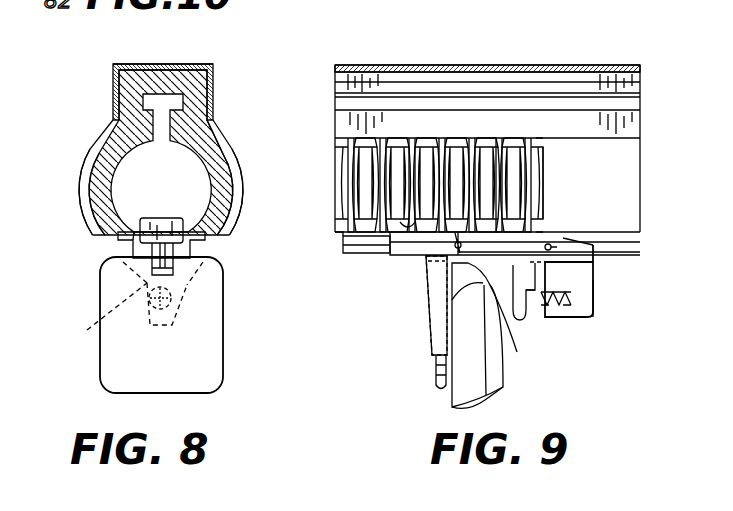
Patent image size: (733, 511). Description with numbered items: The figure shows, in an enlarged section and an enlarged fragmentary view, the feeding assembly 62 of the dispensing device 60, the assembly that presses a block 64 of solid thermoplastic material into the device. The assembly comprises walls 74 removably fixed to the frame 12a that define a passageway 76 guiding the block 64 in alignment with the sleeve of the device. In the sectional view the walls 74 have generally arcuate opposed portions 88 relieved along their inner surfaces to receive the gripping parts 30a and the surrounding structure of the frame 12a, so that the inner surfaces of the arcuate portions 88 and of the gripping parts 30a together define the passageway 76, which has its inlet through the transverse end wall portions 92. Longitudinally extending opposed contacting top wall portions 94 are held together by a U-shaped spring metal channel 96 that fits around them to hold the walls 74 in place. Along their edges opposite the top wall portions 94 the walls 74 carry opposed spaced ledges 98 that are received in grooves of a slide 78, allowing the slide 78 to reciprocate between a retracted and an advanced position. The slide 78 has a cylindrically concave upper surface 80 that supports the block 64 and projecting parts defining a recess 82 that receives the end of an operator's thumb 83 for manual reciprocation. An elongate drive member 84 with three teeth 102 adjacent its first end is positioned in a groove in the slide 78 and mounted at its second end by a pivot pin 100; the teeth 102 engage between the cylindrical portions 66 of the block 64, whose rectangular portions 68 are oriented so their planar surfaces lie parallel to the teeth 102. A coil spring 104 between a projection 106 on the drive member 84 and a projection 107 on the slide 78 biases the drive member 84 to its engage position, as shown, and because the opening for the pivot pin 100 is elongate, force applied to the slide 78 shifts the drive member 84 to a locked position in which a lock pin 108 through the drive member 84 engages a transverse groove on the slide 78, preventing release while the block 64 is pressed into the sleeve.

In FIG. 8, the frame 12a is at (207, 146).
In FIG. 8, the gripping parts 30a is at (95, 192).
In FIG. 8, the dispensing device 60 is at (225, 65).
In FIG. 9, the dispensing device 60 is at (600, 60).
In FIG. 8, the feeding assembly 62 is at (224, 332).
In FIG. 9, the feeding assembly 62 is at (596, 315).
In FIG. 9, the block 64 is at (540, 187).
In FIG. 9, the cylindrical portions 66 is at (496, 150).
In FIG. 9, the rectangular portions 68 is at (453, 154).
In FIG. 8, the walls 74 is at (116, 238).
In FIG. 9, the walls 74 is at (631, 198).
In FIG. 8, the passageway 76 is at (106, 180).
In FIG. 9, the passageway 76 is at (630, 147).
In FIG. 8, the slide 78 is at (102, 293).
In FIG. 9, the slide 78 is at (430, 282).
In FIG. 8, the upper surface 80 is at (134, 232).
In FIG. 9, the upper surface 80 is at (560, 233).
In FIG. 9, the recess 82 is at (517, 352).
In FIG. 9, the thumb 83 is at (493, 384).
In FIG. 8, the drive member 84 is at (152, 249).
In FIG. 9, the drive member 84 is at (392, 246).
In FIG. 8, the arcuate portions 88 is at (93, 154).
In FIG. 8, the end wall portions 92 is at (123, 303).
In FIG. 8, the top wall portions 94 is at (178, 70).
In FIG. 9, the top wall portions 94 is at (390, 78).
In FIG. 8, the U-shaped spring metal channel 96 is at (118, 64).
In FIG. 9, the U-shaped spring metal channel 96 is at (356, 66).
In FIG. 8, the ledges 98 is at (93, 220).
In FIG. 9, the ledges 98 is at (343, 240).
In FIG. 9, the pivot pin 100 is at (556, 249).
In FIG. 8, the teeth 102 is at (162, 219).
In FIG. 9, the teeth 102 is at (408, 226).
In FIG. 9, the coil spring 104 is at (526, 312).
In FIG. 9, the projection 106 is at (533, 296).
In FIG. 9, the projection 107 is at (591, 312).
In FIG. 9, the lock pin 108 is at (431, 316).